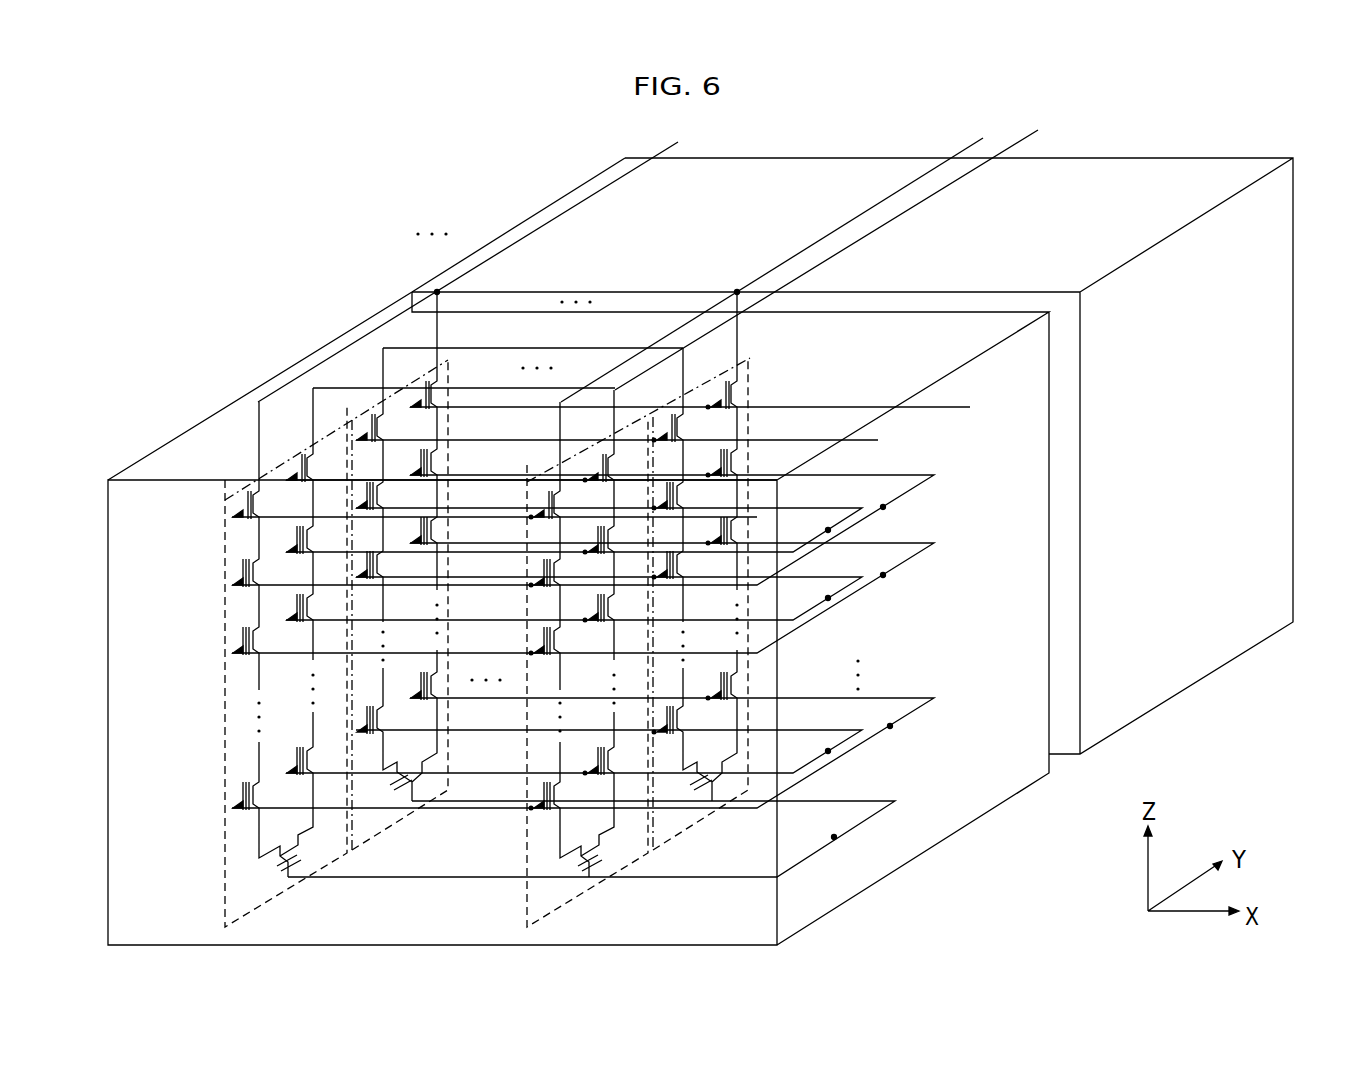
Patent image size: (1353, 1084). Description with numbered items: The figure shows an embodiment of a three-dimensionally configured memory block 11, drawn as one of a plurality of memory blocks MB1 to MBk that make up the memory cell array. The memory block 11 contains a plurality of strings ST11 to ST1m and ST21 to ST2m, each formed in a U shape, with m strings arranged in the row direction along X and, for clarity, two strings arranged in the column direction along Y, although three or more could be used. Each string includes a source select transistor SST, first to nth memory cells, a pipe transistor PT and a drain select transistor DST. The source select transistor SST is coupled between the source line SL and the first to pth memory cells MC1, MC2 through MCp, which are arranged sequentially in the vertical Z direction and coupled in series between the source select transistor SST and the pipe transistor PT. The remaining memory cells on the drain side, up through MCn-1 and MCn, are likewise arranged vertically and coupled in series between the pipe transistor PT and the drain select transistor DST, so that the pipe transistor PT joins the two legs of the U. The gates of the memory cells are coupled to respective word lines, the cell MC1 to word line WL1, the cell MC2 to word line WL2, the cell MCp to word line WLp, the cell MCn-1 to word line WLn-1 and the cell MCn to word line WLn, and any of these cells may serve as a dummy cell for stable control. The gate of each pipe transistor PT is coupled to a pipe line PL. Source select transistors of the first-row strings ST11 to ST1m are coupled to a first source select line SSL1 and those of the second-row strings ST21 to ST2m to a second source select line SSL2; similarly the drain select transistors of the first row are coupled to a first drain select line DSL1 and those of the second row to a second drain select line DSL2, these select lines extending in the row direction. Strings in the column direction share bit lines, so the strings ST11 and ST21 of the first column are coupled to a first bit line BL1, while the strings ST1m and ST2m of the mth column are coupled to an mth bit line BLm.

The memory block 11 is at (1197, 128).
The kth memory block MBk is at (540, 212).
The first memory block MB1 is at (262, 398).
The first bit line BL1 is at (480, 259).
The mth bit line BLm is at (783, 259).
The source line SL is at (683, 245).
The string ST11 is at (286, 643).
The string ST21 is at (370, 420).
The string ST1m is at (547, 470).
The string ST2m is at (675, 400).
The drain select transistor DST is at (233, 511).
The source select transistor SST is at (315, 466).
The nth memory cell MCn is at (233, 576).
The (n-1)th memory cell MCn-1 is at (233, 641).
The first memory cell MC1 is at (316, 537).
The second memory cell MC2 is at (316, 605).
The pth memory cell MCp is at (317, 758).
The pipe transistor PT is at (265, 868).
The first drain select line DSL1 is at (740, 515).
The second drain select line DSL2 is at (714, 408).
The first source select line SSL1 is at (777, 482).
The second source select line SSL2 is at (640, 440).
The nth word line WLn is at (883, 507).
The (n-1)th word line WLn-1 is at (883, 575).
The first word line WL1 is at (828, 530).
The second word line WL2 is at (828, 598).
The pth word line WLp is at (828, 751).
The pipe line PL is at (834, 837).